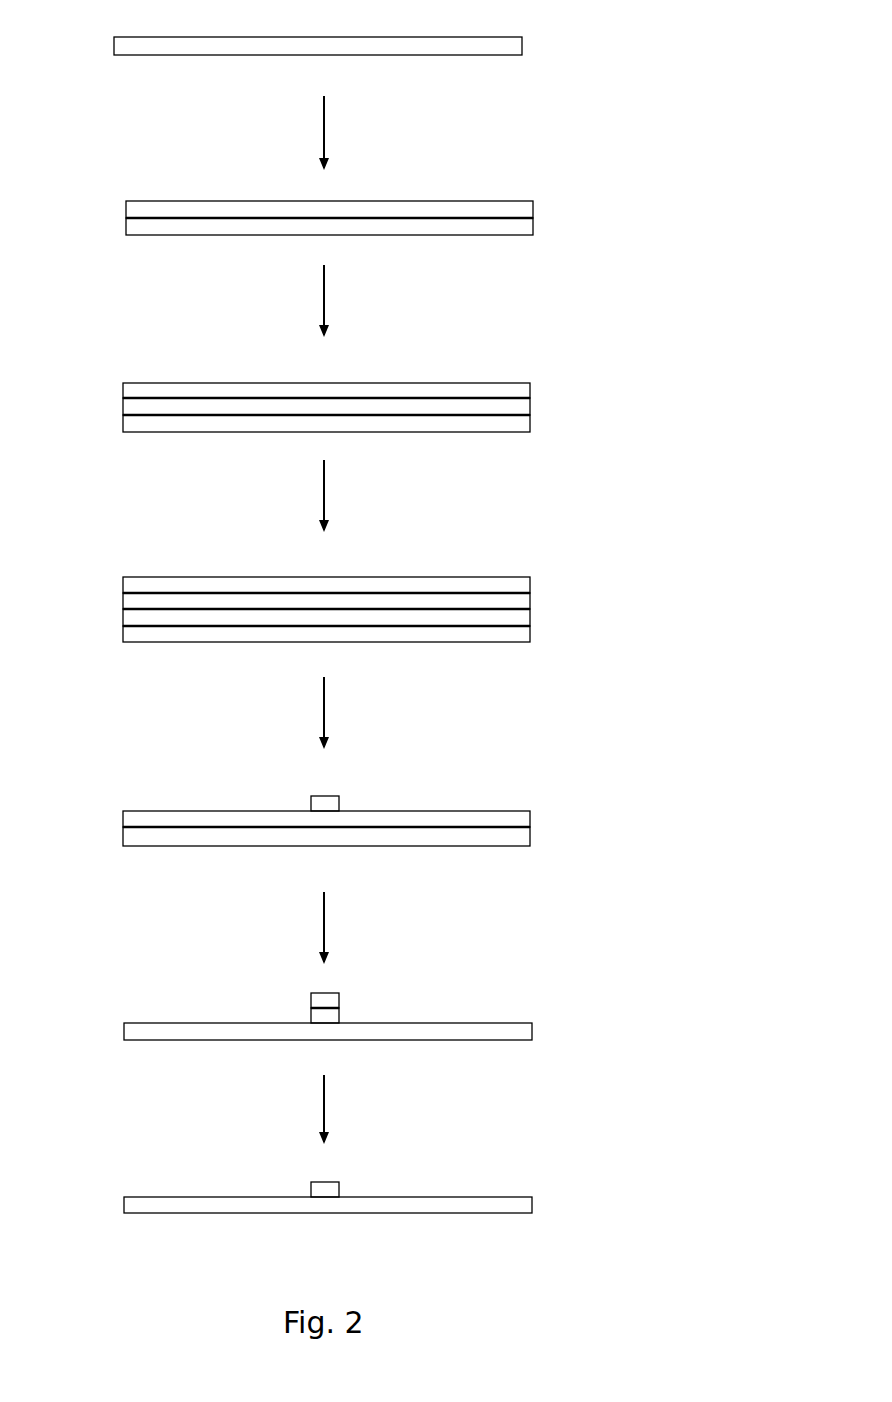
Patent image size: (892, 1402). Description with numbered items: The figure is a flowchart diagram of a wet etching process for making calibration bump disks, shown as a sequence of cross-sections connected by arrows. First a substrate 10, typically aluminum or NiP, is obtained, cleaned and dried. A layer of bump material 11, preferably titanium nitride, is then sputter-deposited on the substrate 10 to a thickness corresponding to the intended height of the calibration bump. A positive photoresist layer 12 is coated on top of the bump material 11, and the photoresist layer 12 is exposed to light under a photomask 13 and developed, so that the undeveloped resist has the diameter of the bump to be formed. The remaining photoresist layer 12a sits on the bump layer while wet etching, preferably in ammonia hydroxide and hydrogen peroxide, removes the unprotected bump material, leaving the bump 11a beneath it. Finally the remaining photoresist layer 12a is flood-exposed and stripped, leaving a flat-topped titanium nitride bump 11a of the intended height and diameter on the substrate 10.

The substrate 10 is at (523, 47).
The bump material layer 11 is at (533, 210).
The positive photoresist layer 12 is at (530, 390).
The photomask 13 is at (485, 578).
The remaining photoresist layer 12a is at (342, 802).
The titanium nitride bump 11a is at (342, 1020).